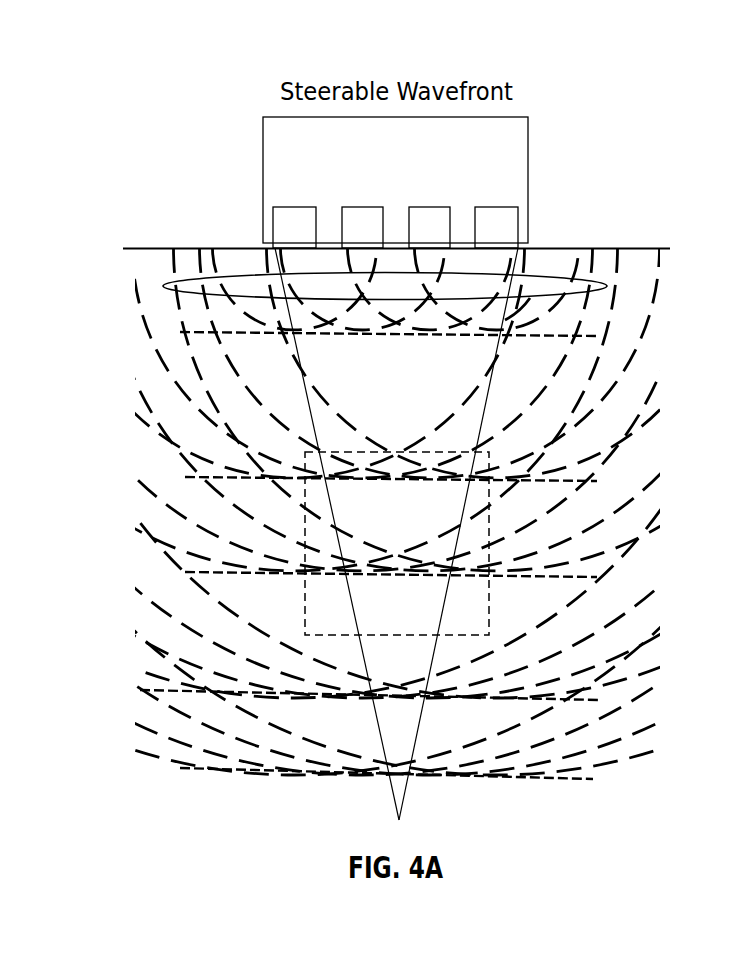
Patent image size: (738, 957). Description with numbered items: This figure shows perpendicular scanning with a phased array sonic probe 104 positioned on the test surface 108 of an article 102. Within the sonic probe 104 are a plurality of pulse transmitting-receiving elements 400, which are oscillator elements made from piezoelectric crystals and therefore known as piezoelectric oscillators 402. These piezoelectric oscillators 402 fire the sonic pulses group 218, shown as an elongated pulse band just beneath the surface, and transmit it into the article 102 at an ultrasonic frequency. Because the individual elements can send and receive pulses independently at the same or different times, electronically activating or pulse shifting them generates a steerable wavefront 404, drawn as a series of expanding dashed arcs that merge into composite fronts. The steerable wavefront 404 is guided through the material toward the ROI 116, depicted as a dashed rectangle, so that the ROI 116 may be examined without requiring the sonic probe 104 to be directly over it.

The sonic probe 104 is at (278, 136).
The pulse transmitting-receiving elements 400 is at (300, 218).
The piezoelectric oscillators 402 is at (303, 191).
The test surface 108 is at (573, 248).
The article 102 is at (652, 248).
The sonic pulses group 218 is at (178, 280).
The steerable wavefront 404 is at (520, 307).
The ROI 116 is at (489, 613).